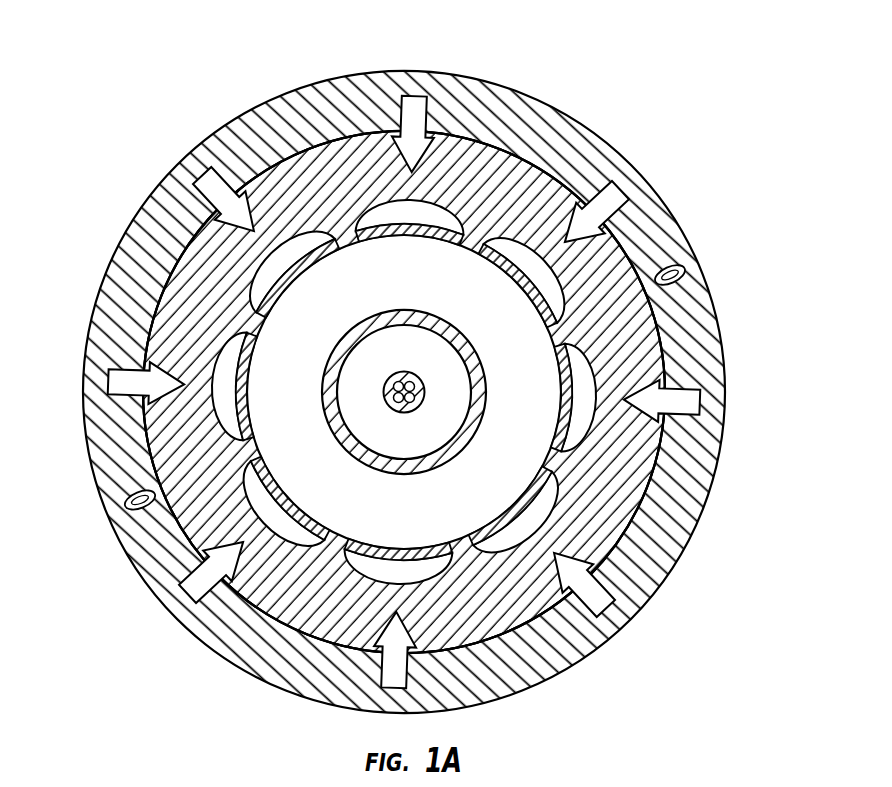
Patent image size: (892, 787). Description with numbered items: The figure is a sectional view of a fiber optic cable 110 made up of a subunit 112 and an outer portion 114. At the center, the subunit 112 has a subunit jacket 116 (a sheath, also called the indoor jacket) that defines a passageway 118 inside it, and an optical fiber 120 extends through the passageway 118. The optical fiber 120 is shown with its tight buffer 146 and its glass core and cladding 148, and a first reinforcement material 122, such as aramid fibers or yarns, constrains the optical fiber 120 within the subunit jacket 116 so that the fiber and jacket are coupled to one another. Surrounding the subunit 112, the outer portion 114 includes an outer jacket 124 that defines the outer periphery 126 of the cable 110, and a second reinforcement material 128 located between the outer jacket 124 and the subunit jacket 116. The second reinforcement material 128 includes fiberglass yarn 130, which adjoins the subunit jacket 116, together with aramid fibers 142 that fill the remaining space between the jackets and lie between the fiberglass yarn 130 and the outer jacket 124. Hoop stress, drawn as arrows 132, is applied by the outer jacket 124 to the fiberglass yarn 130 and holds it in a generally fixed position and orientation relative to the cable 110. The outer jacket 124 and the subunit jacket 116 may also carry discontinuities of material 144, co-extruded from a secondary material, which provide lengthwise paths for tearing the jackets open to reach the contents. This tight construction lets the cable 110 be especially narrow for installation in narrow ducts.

The fiber optic cable 110 is at (755, 31).
The subunit 112 is at (343, 432).
The outer portion 114 is at (550, 503).
The subunit jacket 116 is at (394, 512).
The passageway 118 is at (427, 460).
The optical fiber 120 is at (425, 392).
The first reinforcement material 122 is at (432, 312).
The outer jacket 124 is at (657, 240).
The outer periphery 126 is at (725, 337).
The second reinforcement material 128 is at (115, 515).
The fiberglass yarn 130 is at (375, 568).
The arrows 132 is at (400, 107).
The aramid fibers 142 is at (332, 187).
The discontinuities of material 144 is at (678, 272).
The tight buffer 146 is at (419, 359).
The glass core/cladding 148 is at (387, 382).